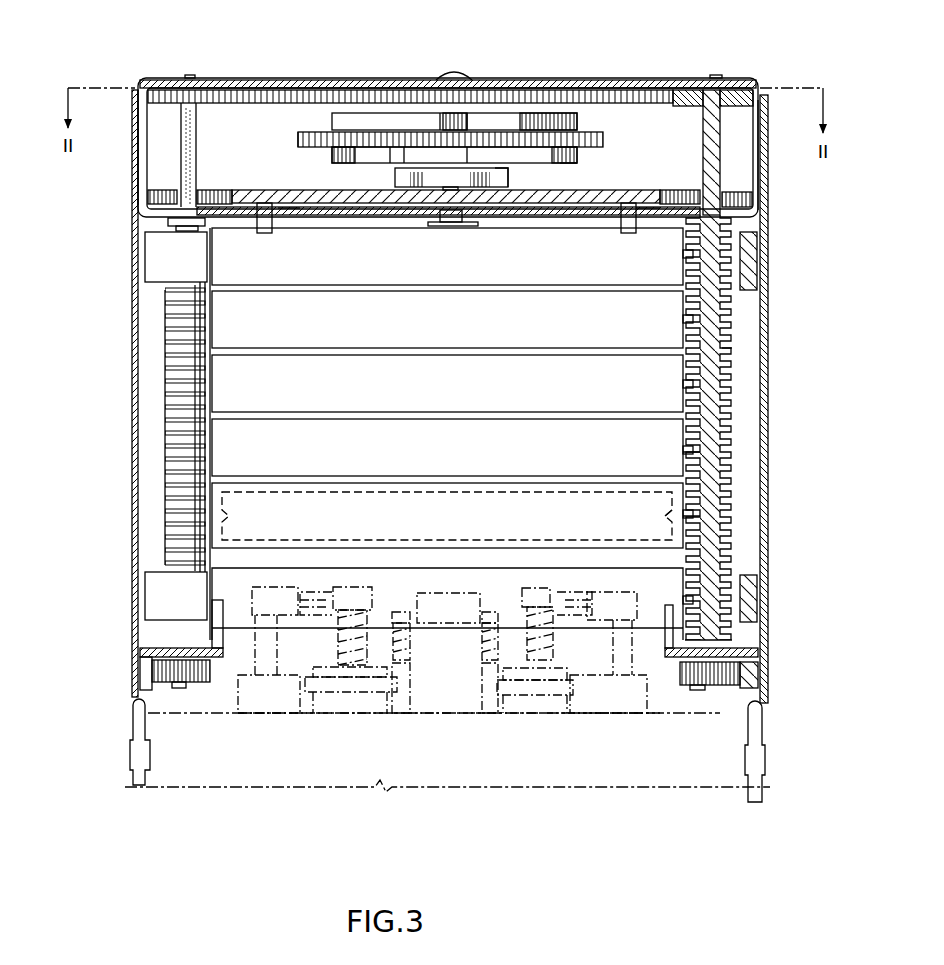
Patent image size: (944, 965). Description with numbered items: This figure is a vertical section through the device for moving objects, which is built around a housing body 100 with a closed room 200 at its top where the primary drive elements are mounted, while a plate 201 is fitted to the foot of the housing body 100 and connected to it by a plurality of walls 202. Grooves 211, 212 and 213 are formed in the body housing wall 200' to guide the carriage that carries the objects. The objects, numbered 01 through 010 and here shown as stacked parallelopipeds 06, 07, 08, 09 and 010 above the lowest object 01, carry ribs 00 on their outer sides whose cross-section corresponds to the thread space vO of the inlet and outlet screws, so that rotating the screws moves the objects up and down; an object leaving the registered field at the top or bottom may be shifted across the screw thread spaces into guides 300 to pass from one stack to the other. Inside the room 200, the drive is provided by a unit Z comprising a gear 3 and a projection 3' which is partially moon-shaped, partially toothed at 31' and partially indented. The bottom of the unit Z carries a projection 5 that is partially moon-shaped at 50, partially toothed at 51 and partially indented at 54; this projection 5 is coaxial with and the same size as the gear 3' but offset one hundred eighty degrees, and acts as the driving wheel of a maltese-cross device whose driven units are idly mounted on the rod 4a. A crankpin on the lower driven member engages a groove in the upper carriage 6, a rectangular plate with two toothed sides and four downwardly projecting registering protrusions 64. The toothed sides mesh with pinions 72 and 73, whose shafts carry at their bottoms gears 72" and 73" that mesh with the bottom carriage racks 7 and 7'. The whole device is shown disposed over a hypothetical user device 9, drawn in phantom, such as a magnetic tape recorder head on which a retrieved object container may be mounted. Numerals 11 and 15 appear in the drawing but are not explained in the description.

The left side wall 11 is at (172, 88).
The rod 4a is at (442, 78).
The right side post 15 is at (741, 92).
The unit Z is at (296, 136).
The projection 3' is at (437, 119).
The toothed portion 31' is at (579, 121).
The gear 3 is at (465, 138).
The toothed portion 51 is at (332, 158).
The moon-shaped portion 50 is at (578, 152).
The projection 5 is at (577, 175).
The indented portion 54 is at (418, 170).
The closed room 200 is at (448, 146).
The body housing wall 200' is at (794, 163).
The pinion 72 is at (162, 178).
The pinion 73 is at (737, 183).
The upper carriage 6 is at (282, 189).
The registering protrusions 64 is at (257, 228).
The groove 211 is at (470, 224).
The groove 212 is at (288, 216).
The groove 213 is at (645, 207).
The guides 300 is at (152, 256).
The walls 202 is at (134, 320).
The ribs 00 is at (178, 383).
The thread space vO is at (168, 402).
The housing body 100 is at (773, 542).
The object 06 is at (270, 267).
The object 07 is at (270, 332).
The object 08 is at (270, 396).
The object 09 is at (270, 460).
The object 010 is at (274, 525).
The object 01 is at (240, 592).
The plate 201 is at (148, 648).
The bottom carriage rack 7 is at (121, 673).
The bottom carriage rack 7' is at (781, 680).
The user device 9 is at (405, 765).